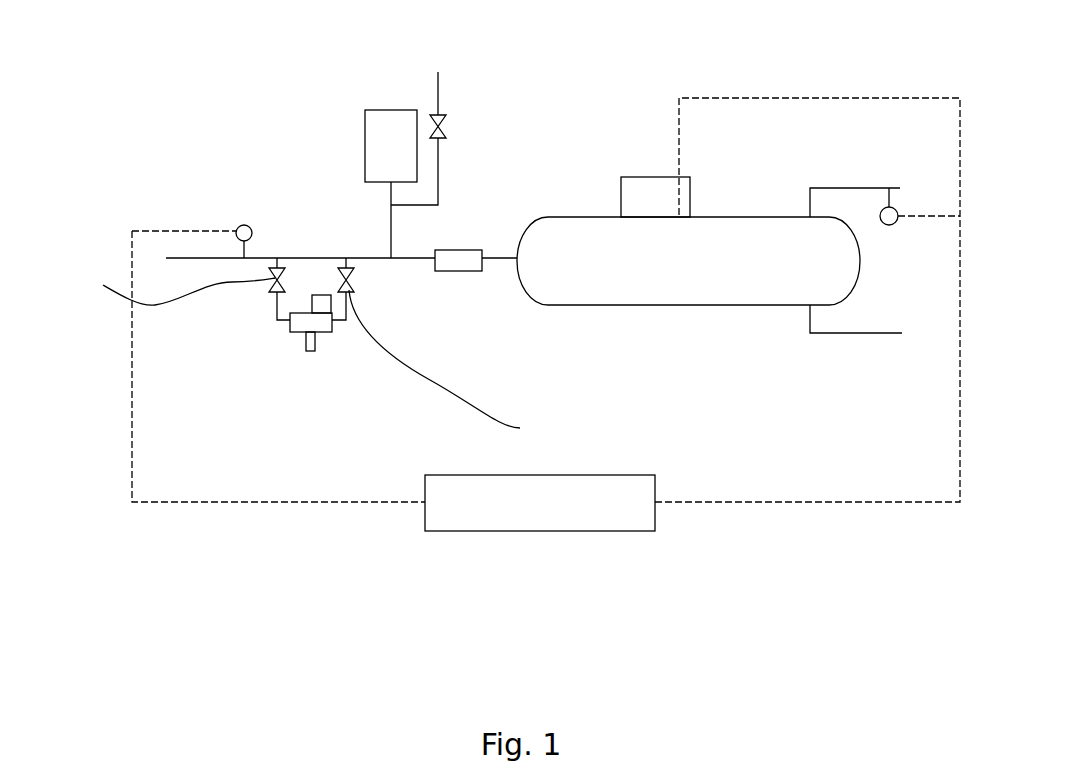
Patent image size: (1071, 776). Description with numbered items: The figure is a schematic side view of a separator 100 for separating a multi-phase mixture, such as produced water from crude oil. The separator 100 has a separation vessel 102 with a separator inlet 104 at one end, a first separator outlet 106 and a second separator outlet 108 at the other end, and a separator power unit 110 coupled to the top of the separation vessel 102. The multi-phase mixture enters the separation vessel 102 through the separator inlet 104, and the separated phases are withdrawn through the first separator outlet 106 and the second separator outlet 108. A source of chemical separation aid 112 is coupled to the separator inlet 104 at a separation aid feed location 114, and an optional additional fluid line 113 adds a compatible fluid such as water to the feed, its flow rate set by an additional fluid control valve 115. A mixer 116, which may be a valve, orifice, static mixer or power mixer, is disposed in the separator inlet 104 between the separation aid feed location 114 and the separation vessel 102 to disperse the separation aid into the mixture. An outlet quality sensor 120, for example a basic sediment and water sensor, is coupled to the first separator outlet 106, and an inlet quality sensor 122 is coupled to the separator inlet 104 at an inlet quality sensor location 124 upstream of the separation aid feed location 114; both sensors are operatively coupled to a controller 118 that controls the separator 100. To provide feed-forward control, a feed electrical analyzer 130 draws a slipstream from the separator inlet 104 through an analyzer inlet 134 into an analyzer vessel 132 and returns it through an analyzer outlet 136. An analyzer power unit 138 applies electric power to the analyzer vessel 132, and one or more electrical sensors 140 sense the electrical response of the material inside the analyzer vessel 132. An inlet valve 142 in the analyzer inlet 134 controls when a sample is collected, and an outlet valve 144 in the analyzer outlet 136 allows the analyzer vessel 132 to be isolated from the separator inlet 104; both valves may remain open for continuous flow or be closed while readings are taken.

The separator 100 is at (762, 36).
The separation vessel 102 is at (655, 306).
The separator inlet 104 is at (494, 258).
The first separator outlet 106 is at (860, 188).
The second separator outlet 108 is at (871, 333).
The separator power unit 110 is at (655, 177).
The source of chemical separation aid 112 is at (390, 110).
The additional fluid line 113 is at (440, 88).
The separation aid feed location 114 is at (391, 258).
The additional fluid control valve 115 is at (446, 125).
The mixer 116 is at (458, 272).
The controller 118 is at (516, 520).
The outlet quality sensor 120 is at (892, 225).
The inlet quality sensor 122 is at (242, 222).
The inlet quality sensor location 124 is at (244, 258).
The feed electrical analyzer 130 is at (270, 443).
The analyzer vessel 132 is at (300, 313).
The analyzer inlet 134 is at (277, 320).
The analyzer outlet 136 is at (347, 322).
The analyzer power unit 138 is at (308, 351).
The electrical sensors 140 is at (322, 295).
The inlet valve 142 is at (157, 286).
The outlet valve 144 is at (463, 367).